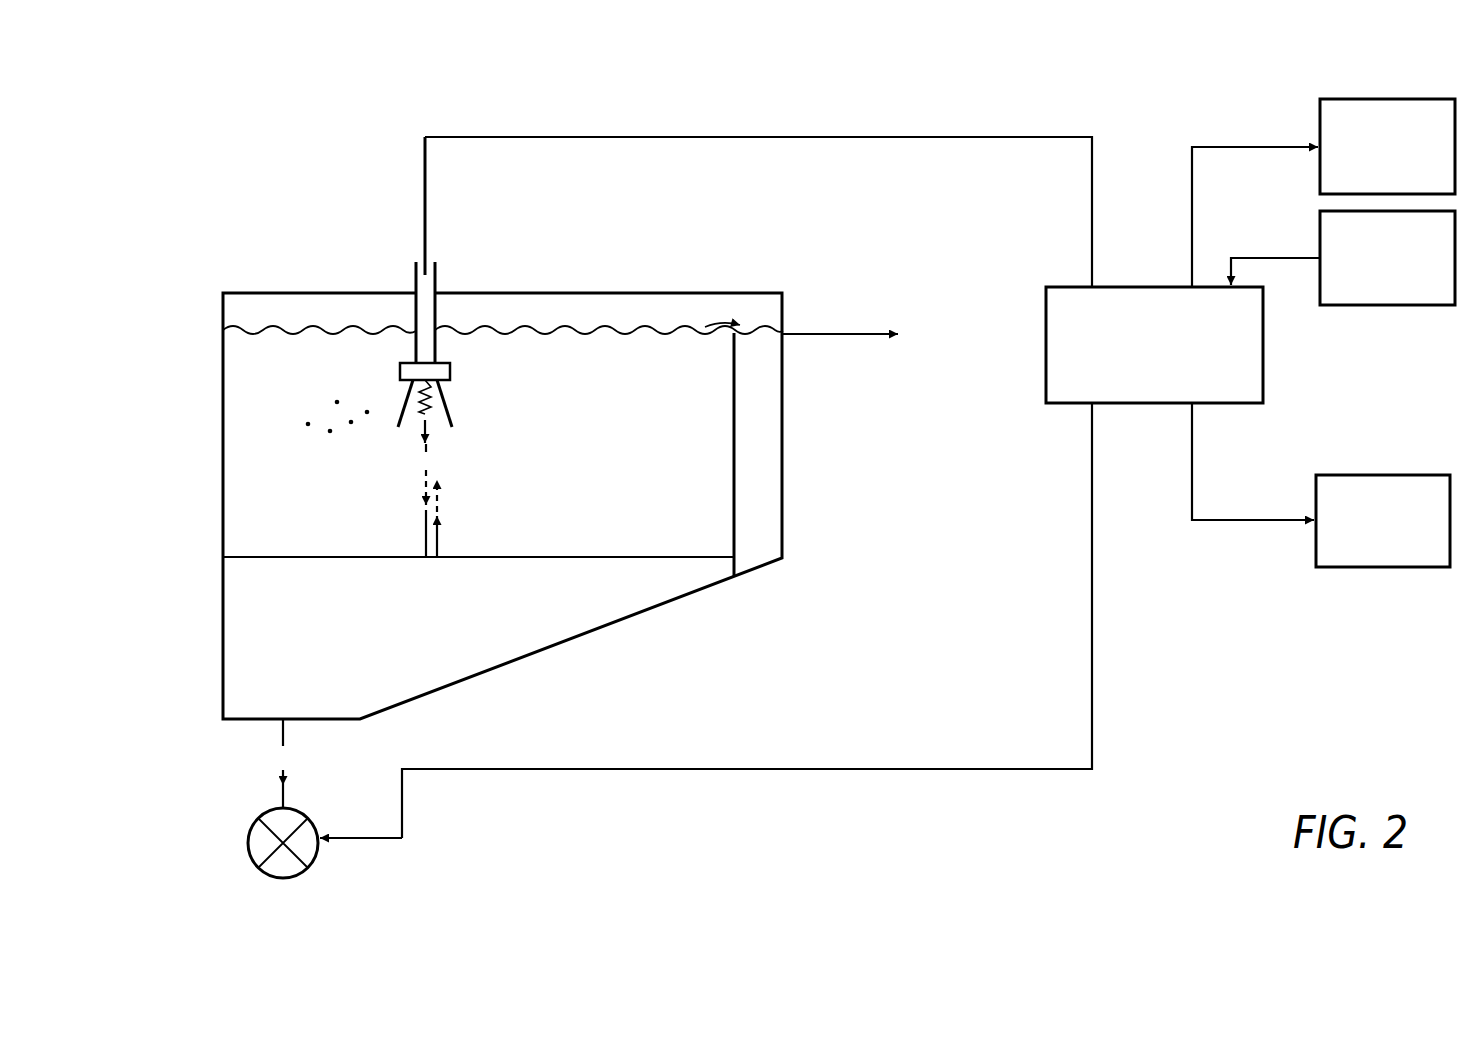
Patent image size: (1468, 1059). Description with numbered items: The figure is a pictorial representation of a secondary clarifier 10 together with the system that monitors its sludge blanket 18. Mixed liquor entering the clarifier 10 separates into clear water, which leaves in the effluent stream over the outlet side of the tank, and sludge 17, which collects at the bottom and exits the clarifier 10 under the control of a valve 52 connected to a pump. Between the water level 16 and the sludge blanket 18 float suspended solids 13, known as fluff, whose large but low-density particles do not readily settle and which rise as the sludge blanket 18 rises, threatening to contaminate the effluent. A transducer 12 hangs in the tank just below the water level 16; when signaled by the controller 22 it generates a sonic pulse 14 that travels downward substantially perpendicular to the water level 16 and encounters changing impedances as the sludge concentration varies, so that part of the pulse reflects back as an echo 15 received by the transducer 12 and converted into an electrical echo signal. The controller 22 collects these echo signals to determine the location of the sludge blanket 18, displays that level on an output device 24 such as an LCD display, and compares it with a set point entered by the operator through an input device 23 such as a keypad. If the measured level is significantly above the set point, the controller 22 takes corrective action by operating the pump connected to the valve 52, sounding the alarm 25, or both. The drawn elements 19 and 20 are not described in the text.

The clarifier 10 is at (713, 711).
The transducer 12 is at (450, 373).
The suspended solids 13 is at (324, 399).
The sonic pulse 14 is at (402, 425).
The echo 15 is at (439, 540).
The water level 16 is at (220, 333).
The sludge 17 is at (243, 685).
The sludge blanket 18 is at (220, 556).
The light detector 19 is at (455, 421).
The effluent weir 20 is at (800, 301).
The controller 22 is at (1254, 317).
The input device 23 is at (1446, 241).
The output device 24 is at (1444, 129).
The alarm 25 is at (1442, 505).
The valve 52 is at (247, 848).